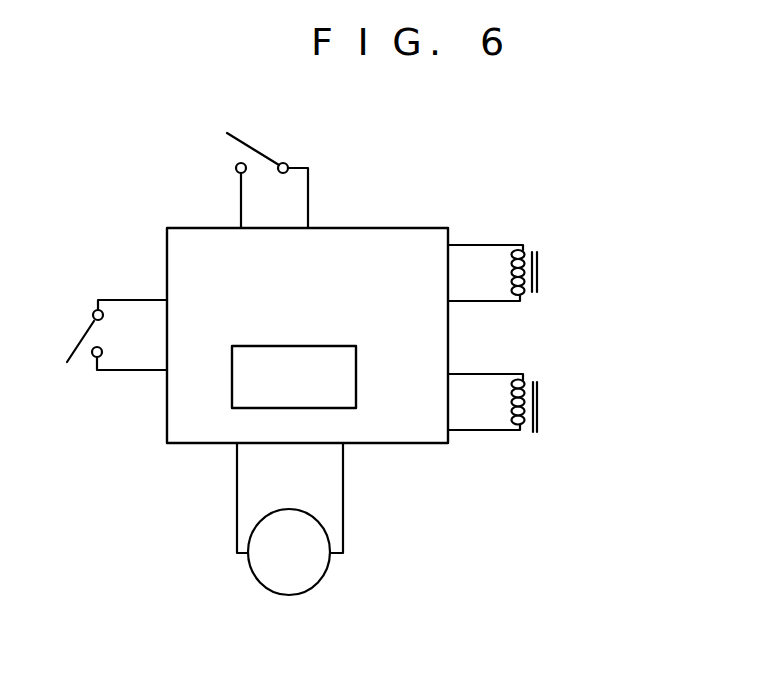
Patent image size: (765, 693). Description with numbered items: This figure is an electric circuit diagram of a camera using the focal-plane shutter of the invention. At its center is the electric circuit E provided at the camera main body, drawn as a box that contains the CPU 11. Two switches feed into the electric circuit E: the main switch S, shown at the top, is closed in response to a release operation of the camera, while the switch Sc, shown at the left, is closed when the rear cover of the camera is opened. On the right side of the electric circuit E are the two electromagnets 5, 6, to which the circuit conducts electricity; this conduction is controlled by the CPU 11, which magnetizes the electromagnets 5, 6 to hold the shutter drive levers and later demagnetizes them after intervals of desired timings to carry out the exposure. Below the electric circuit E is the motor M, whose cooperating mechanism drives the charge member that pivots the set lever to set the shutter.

The electric circuit E is at (368, 252).
The main switch S is at (267, 143).
The switch Sc is at (80, 367).
The CPU 11 is at (357, 382).
The electromagnet 5 is at (550, 267).
The electromagnet 6 is at (550, 407).
The motor M is at (313, 578).